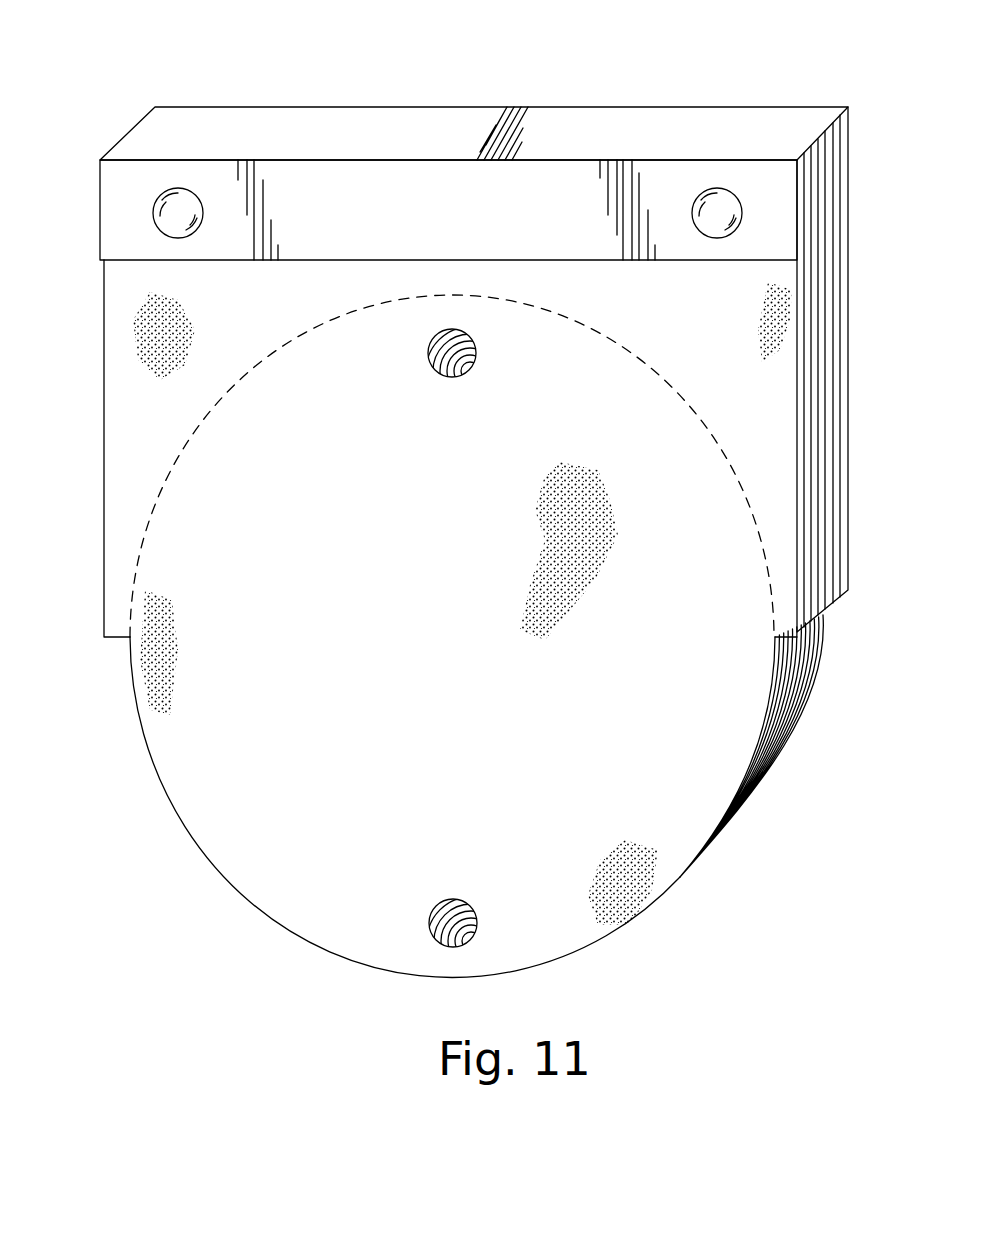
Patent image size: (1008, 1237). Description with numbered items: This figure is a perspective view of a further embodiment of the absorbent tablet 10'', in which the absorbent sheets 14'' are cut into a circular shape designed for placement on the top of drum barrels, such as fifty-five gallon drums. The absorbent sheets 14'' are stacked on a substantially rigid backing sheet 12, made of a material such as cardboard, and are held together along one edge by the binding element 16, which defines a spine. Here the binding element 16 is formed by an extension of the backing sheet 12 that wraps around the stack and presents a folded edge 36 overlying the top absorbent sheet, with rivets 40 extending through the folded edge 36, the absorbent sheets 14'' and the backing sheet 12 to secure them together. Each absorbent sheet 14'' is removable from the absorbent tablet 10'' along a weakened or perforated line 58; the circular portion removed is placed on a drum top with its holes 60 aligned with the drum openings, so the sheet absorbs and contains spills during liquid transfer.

The absorbent tablet 10'' is at (372, 47).
The binding element 16 is at (122, 138).
The folded edge 36 is at (406, 230).
The rivets 40 is at (166, 226).
The backing sheet 12 is at (848, 356).
The weakened or perforated line 58 is at (619, 348).
The holes 60 is at (433, 368).
The absorbent sheets 14'' is at (751, 760).